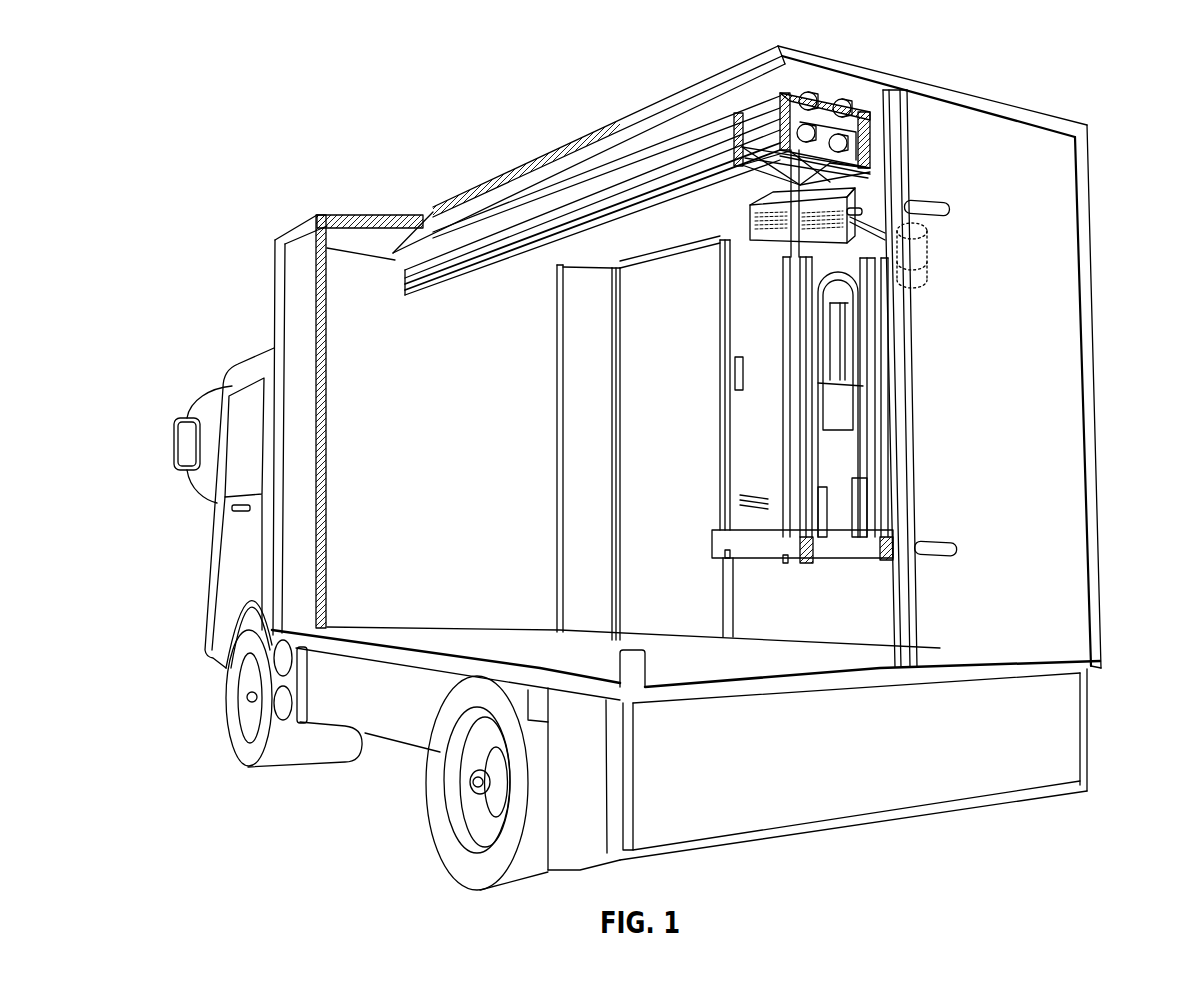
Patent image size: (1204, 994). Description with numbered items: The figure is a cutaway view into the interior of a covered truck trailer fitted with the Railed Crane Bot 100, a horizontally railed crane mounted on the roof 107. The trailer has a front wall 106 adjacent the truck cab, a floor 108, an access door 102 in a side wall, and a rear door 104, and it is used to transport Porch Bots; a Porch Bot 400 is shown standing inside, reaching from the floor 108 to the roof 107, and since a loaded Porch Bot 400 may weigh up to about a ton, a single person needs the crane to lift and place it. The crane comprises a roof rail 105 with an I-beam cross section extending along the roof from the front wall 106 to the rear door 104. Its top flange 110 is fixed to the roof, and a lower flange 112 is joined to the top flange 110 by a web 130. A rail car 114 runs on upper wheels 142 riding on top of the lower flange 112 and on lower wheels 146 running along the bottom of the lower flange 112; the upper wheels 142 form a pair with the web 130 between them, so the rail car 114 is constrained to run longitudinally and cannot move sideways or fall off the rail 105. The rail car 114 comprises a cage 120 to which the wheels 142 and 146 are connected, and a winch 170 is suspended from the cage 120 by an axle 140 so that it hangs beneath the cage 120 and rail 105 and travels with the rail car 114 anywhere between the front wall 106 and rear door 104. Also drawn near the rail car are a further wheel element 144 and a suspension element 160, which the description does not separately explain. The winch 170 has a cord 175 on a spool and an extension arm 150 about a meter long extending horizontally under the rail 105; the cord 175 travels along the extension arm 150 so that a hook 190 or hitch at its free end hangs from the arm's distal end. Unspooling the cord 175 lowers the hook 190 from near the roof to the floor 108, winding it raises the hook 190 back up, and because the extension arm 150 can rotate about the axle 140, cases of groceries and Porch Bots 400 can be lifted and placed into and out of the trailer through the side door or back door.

The Railed Crane Bot 100 is at (250, 98).
The access door 102 is at (705, 478).
The rear door 104 is at (1065, 465).
The roof rail 105 is at (497, 238).
The front wall 106 is at (333, 297).
The roof 107 is at (984, 126).
The floor 108 is at (483, 640).
The top flange 110 is at (812, 97).
The lower flange 112 is at (850, 126).
The rail car 114 is at (718, 208).
The cage 120 is at (733, 117).
The web 130 is at (845, 98).
The axle 140 is at (815, 253).
The upper wheels 142 is at (850, 118).
The roller 144 is at (786, 90).
The lower wheels 146 is at (840, 148).
The extension arm 150 is at (866, 214).
The shaft 160 is at (806, 250).
The winch 170 is at (790, 232).
The cord 175 is at (932, 262).
The hook 190 is at (928, 280).
The Porch Bot 400 is at (711, 416).